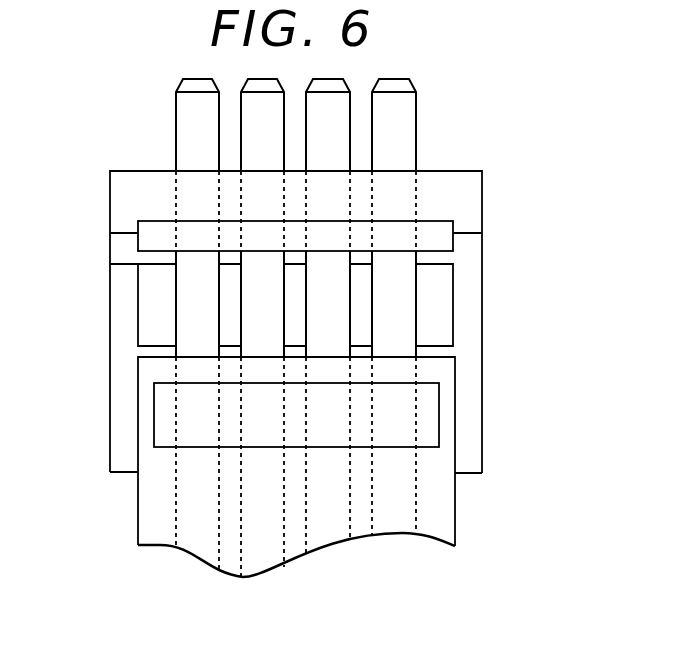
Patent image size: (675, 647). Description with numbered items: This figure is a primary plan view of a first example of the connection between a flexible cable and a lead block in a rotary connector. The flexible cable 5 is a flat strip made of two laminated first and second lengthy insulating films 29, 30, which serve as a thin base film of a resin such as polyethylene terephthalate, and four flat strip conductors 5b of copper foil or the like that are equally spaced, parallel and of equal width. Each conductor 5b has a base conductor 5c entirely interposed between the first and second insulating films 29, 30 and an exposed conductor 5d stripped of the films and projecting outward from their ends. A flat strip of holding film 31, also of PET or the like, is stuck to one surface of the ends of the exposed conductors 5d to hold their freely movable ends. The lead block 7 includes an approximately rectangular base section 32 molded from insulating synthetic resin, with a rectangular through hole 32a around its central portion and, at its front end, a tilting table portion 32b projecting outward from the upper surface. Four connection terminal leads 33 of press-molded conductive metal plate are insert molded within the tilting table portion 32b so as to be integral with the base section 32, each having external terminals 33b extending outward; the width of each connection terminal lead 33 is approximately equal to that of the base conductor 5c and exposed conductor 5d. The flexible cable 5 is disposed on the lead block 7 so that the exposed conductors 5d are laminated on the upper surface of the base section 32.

The flexible cable 5 is at (313, 399).
The conductors 5b is at (186, 515).
The base conductor 5c is at (193, 550).
The exposed conductor 5d is at (403, 290).
The lead block 7 is at (295, 322).
The first insulating film 29 is at (351, 565).
The second insulating film 30 is at (296, 580).
The holding film 31 is at (440, 237).
The base section 32 is at (339, 322).
The through hole 32a is at (155, 318).
The tilting table portion 32b is at (465, 187).
The connection terminal leads 33 is at (313, 263).
The external terminals 33b is at (400, 115).